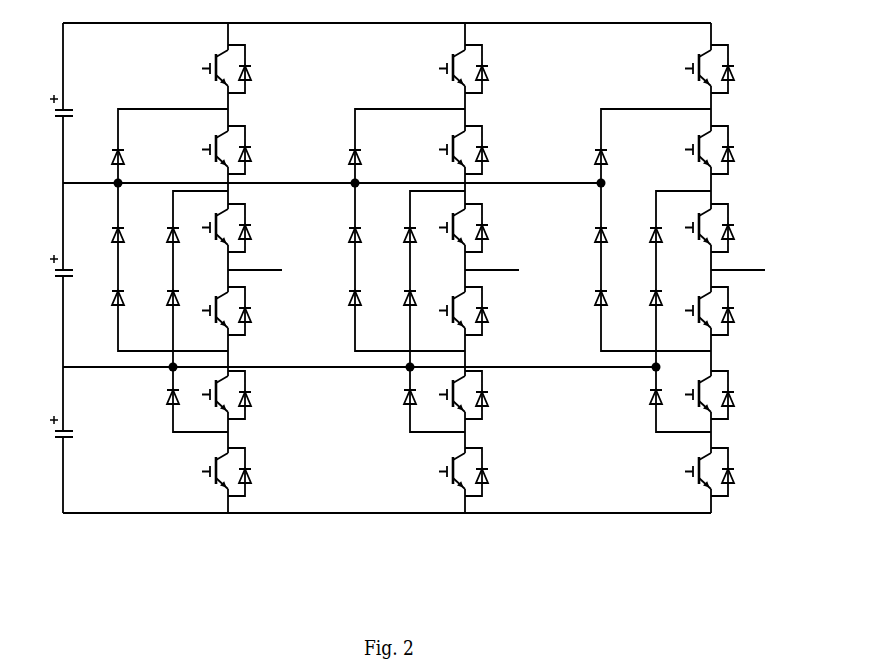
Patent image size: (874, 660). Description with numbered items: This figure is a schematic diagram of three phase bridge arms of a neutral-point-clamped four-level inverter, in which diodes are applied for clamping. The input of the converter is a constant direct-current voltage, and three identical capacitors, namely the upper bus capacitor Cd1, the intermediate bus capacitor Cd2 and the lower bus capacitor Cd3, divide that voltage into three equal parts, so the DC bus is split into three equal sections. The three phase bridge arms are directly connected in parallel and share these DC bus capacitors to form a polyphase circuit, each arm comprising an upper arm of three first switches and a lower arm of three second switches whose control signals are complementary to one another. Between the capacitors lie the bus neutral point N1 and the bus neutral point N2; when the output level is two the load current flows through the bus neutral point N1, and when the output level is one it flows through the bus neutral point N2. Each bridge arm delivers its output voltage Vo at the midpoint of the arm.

The bus neutral point N1 is at (317, 195).
The bus neutral point N2 is at (344, 371).
The upper bus capacitor Cd1 is at (57, 110).
The intermediate bus capacitor Cd2 is at (57, 270).
The lower bus capacitor Cd3 is at (57, 432).
The output voltage terminal Vo is at (483, 272).